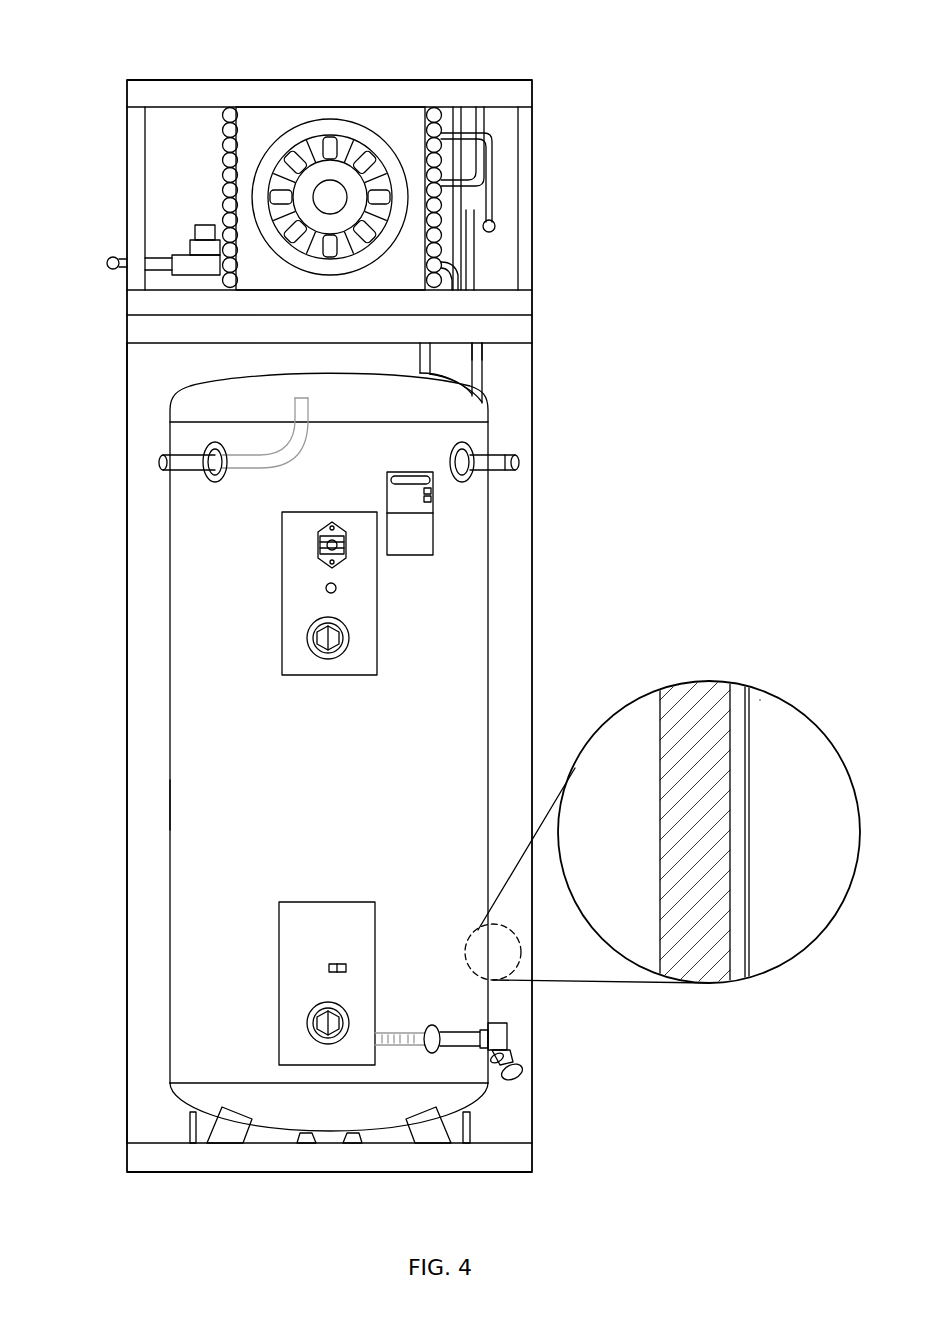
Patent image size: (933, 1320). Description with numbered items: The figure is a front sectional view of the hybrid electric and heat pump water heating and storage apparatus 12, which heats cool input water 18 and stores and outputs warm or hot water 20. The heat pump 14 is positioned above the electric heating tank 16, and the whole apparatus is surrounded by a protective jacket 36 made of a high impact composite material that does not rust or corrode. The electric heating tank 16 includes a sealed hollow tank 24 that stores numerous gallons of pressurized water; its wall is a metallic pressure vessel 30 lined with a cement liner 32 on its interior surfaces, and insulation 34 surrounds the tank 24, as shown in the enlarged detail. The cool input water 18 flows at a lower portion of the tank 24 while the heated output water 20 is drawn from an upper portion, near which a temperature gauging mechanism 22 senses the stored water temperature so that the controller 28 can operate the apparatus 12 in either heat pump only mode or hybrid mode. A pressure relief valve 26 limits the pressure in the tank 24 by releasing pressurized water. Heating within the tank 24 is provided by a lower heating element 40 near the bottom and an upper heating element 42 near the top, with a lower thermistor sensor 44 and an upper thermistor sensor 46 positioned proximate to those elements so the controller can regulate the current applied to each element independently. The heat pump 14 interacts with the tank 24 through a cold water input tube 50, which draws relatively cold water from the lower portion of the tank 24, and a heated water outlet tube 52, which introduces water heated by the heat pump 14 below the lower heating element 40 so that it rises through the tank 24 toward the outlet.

The water heating and storage apparatus 12 is at (140, 66).
The heat pump 14 is at (557, 80).
The electric heating tank 16 is at (491, 646).
The cool input water 18 is at (525, 1077).
The output warm or hot water 20 is at (163, 462).
The temperature gauging mechanism 22 is at (318, 546).
The tank 24 is at (170, 803).
The pressure relief valve 26 is at (519, 462).
The controller 28 is at (433, 503).
The pressure vessel 30 is at (745, 697).
The cement liner 32 is at (699, 701).
The insulation 34 is at (826, 780).
The protective jacket 36 is at (126, 908).
The lower heating element 40 is at (307, 1023).
The upper heating element 42 is at (307, 638).
The lower thermistor sensor 44 is at (329, 968).
The upper thermistor sensor 46 is at (326, 588).
The cold water input tube 50 is at (484, 400).
The heated water outlet tube 52 is at (484, 348).